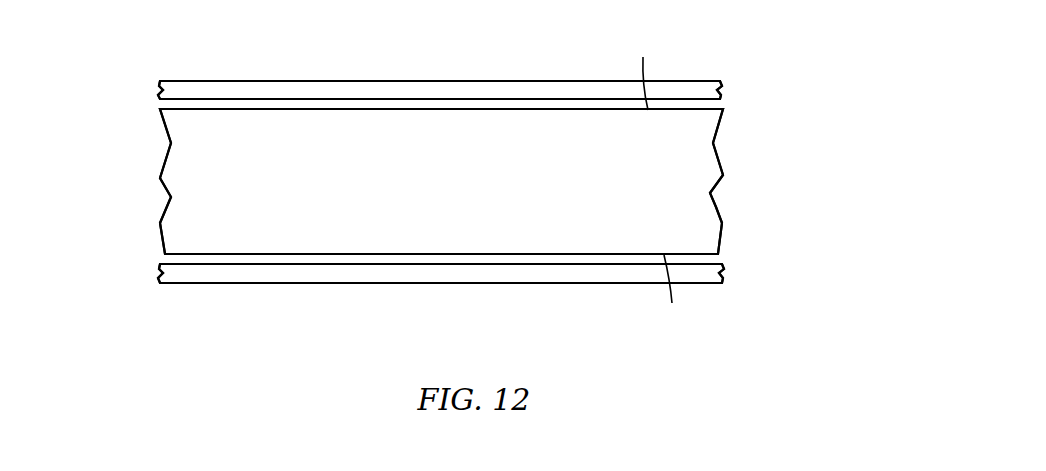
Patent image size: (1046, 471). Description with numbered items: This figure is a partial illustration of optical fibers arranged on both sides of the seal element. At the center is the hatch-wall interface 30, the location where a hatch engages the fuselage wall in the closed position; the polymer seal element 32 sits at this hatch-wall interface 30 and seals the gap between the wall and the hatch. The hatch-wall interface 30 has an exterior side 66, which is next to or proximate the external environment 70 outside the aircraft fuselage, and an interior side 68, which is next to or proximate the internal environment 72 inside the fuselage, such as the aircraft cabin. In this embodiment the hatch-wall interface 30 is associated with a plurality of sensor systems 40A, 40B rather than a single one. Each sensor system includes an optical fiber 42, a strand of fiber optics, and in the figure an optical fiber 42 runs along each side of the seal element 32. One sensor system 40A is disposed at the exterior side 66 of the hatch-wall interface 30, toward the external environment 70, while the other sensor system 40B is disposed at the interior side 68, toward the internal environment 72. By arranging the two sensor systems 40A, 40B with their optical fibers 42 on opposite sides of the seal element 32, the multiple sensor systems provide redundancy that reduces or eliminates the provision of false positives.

The hatch-wall interface 30 is at (756, 136).
The seal element 32 is at (716, 207).
The sensor system 40A is at (150, 290).
The sensor system 40B is at (150, 76).
The optical fiber 42 is at (720, 91).
The exterior side 66 is at (673, 293).
The interior side 68 is at (642, 70).
The external environment 70 is at (395, 359).
The internal environment 72 is at (392, 45).